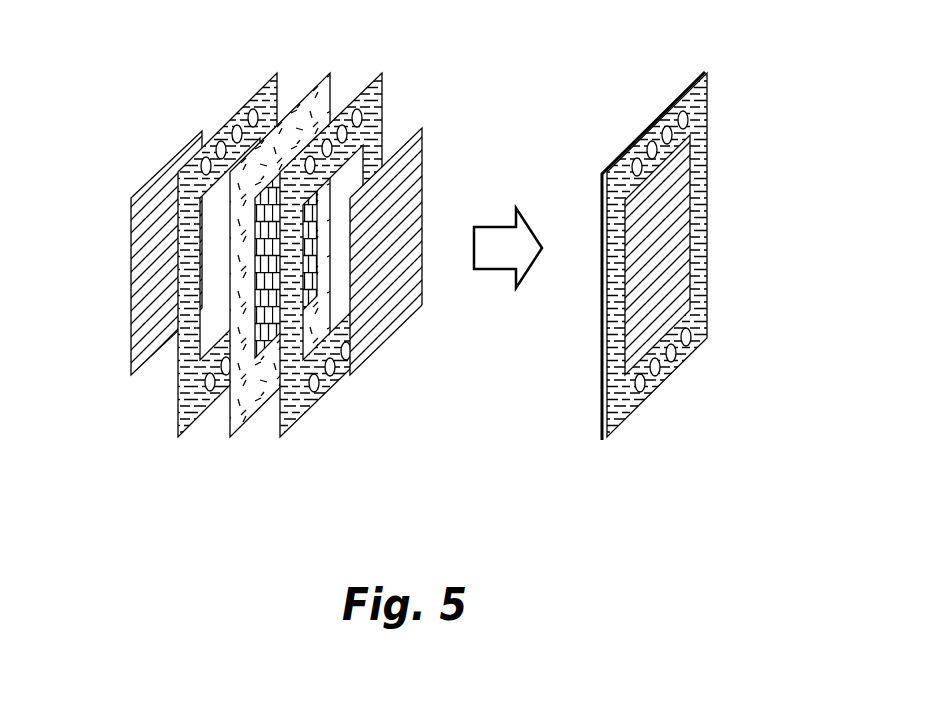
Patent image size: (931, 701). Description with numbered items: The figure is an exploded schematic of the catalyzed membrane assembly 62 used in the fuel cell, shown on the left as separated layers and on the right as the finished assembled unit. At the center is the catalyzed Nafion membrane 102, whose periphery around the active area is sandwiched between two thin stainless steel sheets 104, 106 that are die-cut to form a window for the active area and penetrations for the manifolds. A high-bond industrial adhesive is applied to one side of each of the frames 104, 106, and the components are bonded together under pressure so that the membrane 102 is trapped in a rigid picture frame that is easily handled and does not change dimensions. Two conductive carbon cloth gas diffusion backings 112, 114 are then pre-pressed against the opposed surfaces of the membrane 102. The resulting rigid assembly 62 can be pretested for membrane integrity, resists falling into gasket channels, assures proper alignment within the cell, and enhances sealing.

The catalyzed membrane assembly 62 is at (728, 97).
The membrane 102 is at (256, 306).
The stainless steel sheet frame 104 is at (268, 73).
The stainless steel sheet frame 106 is at (332, 393).
The gas diffusion backing 112 is at (130, 259).
The gas diffusion backing 114 is at (422, 205).